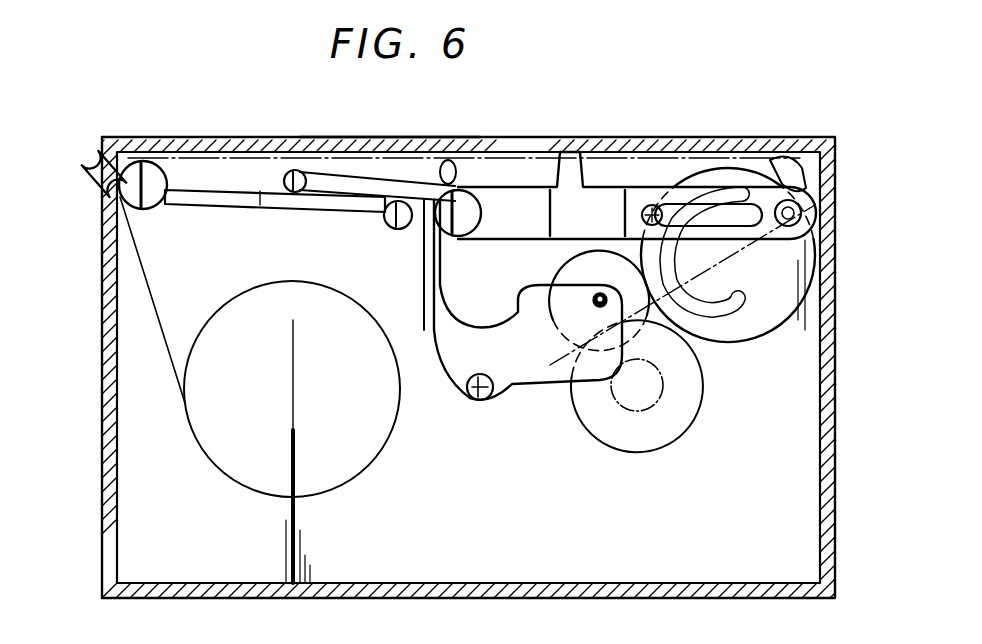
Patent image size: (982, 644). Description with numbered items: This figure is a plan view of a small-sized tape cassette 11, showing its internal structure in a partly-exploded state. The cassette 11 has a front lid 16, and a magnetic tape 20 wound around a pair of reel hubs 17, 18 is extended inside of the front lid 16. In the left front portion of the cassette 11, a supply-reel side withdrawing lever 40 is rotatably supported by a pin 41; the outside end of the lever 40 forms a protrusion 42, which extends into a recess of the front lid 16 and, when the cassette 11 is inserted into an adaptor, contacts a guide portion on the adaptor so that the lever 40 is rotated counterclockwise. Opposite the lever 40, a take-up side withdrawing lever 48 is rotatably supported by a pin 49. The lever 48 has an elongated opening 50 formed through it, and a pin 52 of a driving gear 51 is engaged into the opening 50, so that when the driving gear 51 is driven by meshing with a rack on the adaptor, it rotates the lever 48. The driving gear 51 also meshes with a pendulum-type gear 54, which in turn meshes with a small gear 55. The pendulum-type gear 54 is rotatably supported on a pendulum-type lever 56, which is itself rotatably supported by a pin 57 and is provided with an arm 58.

The small-sized tape cassette 11 is at (100, 468).
The front lid 16 is at (392, 137).
The reel hub 17 is at (330, 495).
The reel hub 18 is at (700, 405).
The magnetic tape 20 is at (636, 158).
The supply-reel side withdrawing lever 40 is at (258, 205).
The pin 41 is at (158, 204).
The protrusion 42 is at (92, 148).
The take-up side withdrawing lever 48 is at (520, 205).
The pin 49 is at (800, 212).
The elongated opening 50 is at (735, 215).
The driving gear 51 is at (786, 320).
The pin 52 is at (676, 270).
The pendulum-type gear 54 is at (565, 258).
The small gear 55 is at (642, 412).
The pendulum-type lever 56 is at (436, 368).
The pin 57 is at (488, 398).
The arm 58 is at (424, 252).